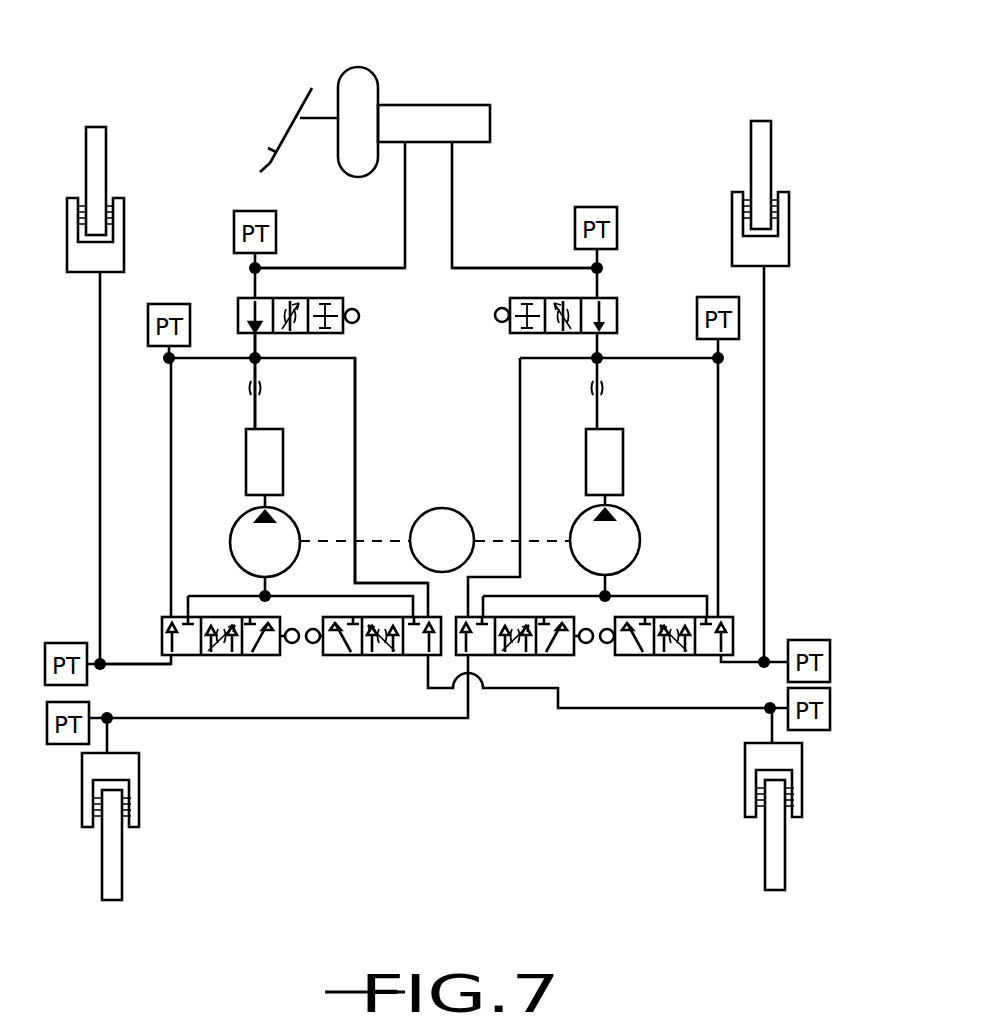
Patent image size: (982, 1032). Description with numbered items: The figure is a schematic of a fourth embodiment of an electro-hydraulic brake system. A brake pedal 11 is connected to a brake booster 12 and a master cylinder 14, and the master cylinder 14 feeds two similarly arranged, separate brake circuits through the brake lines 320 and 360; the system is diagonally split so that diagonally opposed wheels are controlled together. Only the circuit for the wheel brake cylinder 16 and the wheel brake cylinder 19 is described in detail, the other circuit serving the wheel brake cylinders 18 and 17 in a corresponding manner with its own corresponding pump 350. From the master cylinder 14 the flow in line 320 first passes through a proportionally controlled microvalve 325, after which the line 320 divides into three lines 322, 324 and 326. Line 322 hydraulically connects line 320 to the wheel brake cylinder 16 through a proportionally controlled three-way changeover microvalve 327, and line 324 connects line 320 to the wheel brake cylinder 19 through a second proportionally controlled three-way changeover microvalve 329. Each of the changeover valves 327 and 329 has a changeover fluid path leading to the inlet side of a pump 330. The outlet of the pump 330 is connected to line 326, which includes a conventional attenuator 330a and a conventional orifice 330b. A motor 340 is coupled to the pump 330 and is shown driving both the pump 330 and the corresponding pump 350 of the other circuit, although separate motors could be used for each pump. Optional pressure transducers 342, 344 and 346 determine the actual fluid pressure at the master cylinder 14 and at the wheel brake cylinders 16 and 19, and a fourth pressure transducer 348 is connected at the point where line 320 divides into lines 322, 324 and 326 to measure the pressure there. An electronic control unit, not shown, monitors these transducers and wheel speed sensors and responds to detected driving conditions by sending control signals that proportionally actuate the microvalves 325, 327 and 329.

The brake pedal 11 is at (300, 103).
The brake booster 12 is at (353, 67).
The master cylinder 14 is at (440, 110).
The wheel brake cylinder 16 is at (122, 228).
The wheel brake cylinder 17 is at (140, 777).
The wheel brake cylinder 18 is at (790, 237).
The wheel brake cylinder 19 is at (800, 765).
The brake line 320 is at (300, 262).
The line 322 is at (171, 427).
The line 324 is at (358, 408).
The proportionally controlled microvalve 325 is at (359, 298).
The line 326 is at (257, 415).
The proportionally controlled 3-way changeover microvalve 327 is at (230, 655).
The proportionally controlled 3-way changeover microvalve 329 is at (370, 655).
The pump 330 is at (302, 533).
The attenuator 330a is at (283, 439).
The orifice 330b is at (263, 386).
The motor 340 is at (438, 508).
The pressure transducer 342 is at (237, 212).
The pressure transducer 344 is at (62, 642).
The pressure transducer 346 is at (832, 712).
The pressure transducer 348 is at (153, 297).
The pump 350 is at (617, 510).
The brake line 360 is at (470, 268).